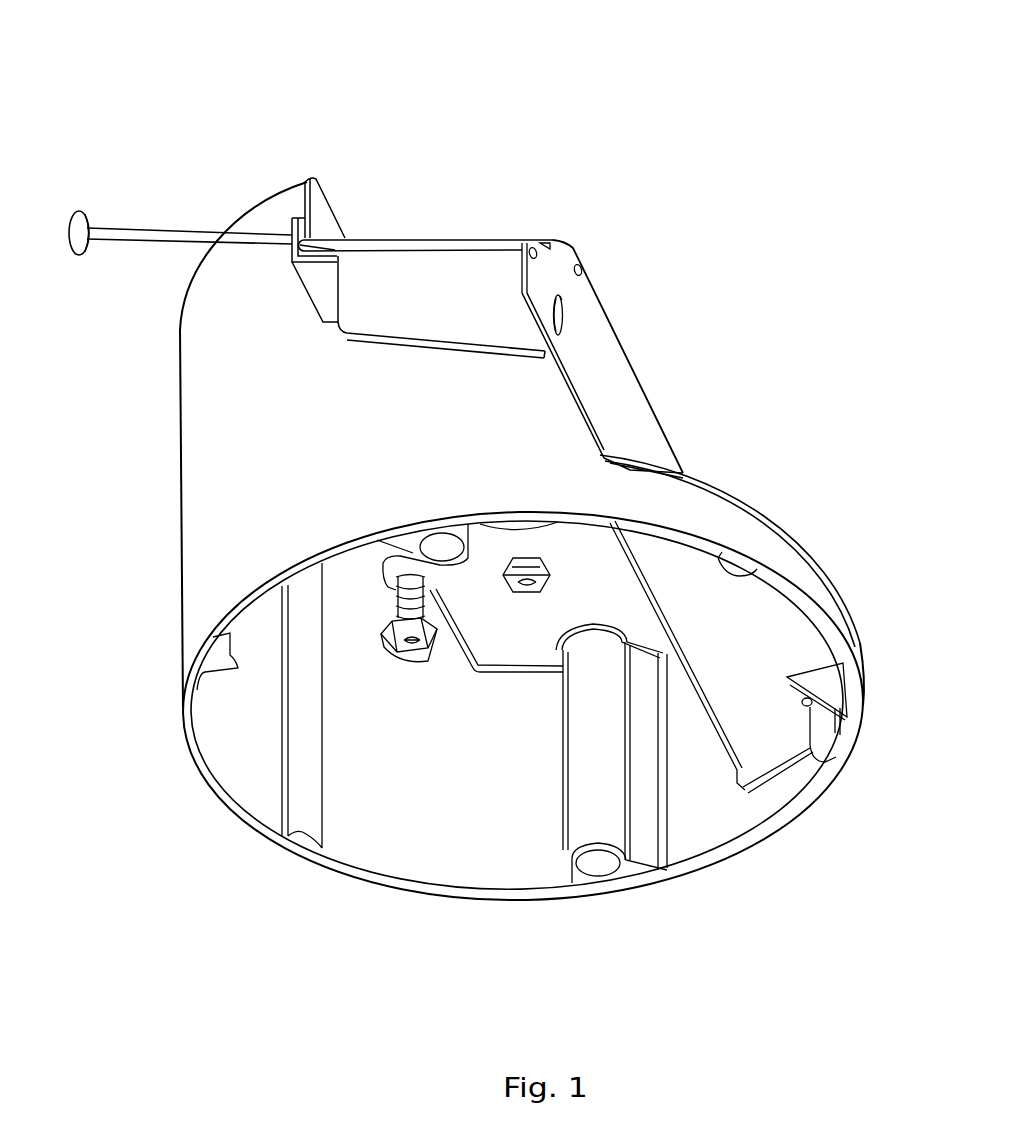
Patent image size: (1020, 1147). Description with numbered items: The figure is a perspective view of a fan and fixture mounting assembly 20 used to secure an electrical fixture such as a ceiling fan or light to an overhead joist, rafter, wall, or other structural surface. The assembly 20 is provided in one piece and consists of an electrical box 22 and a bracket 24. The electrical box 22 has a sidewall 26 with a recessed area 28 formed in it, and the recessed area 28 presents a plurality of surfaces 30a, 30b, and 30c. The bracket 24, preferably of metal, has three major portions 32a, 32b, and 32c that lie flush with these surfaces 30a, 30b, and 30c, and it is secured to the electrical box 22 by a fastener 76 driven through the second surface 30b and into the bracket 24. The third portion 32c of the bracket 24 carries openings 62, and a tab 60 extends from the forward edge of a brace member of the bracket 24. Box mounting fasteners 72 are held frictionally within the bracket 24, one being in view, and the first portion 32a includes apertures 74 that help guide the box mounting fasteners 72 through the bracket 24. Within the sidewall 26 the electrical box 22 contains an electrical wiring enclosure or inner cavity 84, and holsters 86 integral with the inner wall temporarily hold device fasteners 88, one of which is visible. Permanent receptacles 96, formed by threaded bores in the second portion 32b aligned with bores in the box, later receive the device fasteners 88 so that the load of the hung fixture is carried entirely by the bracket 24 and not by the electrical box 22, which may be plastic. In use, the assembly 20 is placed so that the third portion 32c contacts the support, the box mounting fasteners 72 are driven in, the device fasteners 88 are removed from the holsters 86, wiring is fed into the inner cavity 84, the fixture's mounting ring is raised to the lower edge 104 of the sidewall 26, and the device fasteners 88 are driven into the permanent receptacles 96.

The fan and fixture mounting assembly 20 is at (162, 96).
The electrical box 22 is at (177, 368).
The bracket 24 is at (573, 248).
The sidewall 26 is at (263, 401).
The recessed area 28 is at (452, 192).
The first surface 30a is at (335, 225).
The second surface 30b is at (333, 338).
The third surface 30c is at (612, 454).
The first portion 32a is at (292, 213).
The second portion 32b is at (322, 273).
The third portion 32c is at (605, 370).
The tab 60 is at (563, 317).
The openings 62 is at (564, 297).
The box mounting fasteners 72 is at (140, 233).
The apertures 74 is at (330, 223).
The fastener 76 is at (507, 588).
The inner cavity 84 is at (427, 838).
The holsters 86 is at (388, 582).
The device fasteners 88 is at (397, 660).
The permanent receptacles 96 is at (443, 548).
The lower edge 104 is at (752, 837).